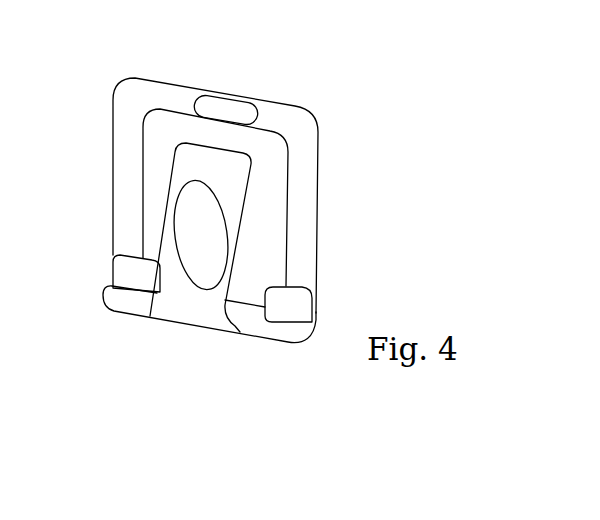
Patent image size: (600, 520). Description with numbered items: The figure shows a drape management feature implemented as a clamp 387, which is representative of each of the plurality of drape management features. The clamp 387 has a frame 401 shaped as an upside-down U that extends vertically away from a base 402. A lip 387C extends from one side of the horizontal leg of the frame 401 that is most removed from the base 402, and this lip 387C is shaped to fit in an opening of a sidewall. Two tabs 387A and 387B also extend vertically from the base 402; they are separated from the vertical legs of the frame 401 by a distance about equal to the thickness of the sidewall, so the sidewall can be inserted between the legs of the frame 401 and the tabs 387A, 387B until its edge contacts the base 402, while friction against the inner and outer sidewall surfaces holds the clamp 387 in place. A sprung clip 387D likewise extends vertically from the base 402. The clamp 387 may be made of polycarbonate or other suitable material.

The clamp 387 is at (90, 72).
The tab 387A is at (130, 268).
The tab 387B is at (297, 305).
The lip 387C is at (227, 113).
The sprung clip 387D is at (173, 282).
The frame 401 is at (308, 182).
The base 402 is at (253, 325).